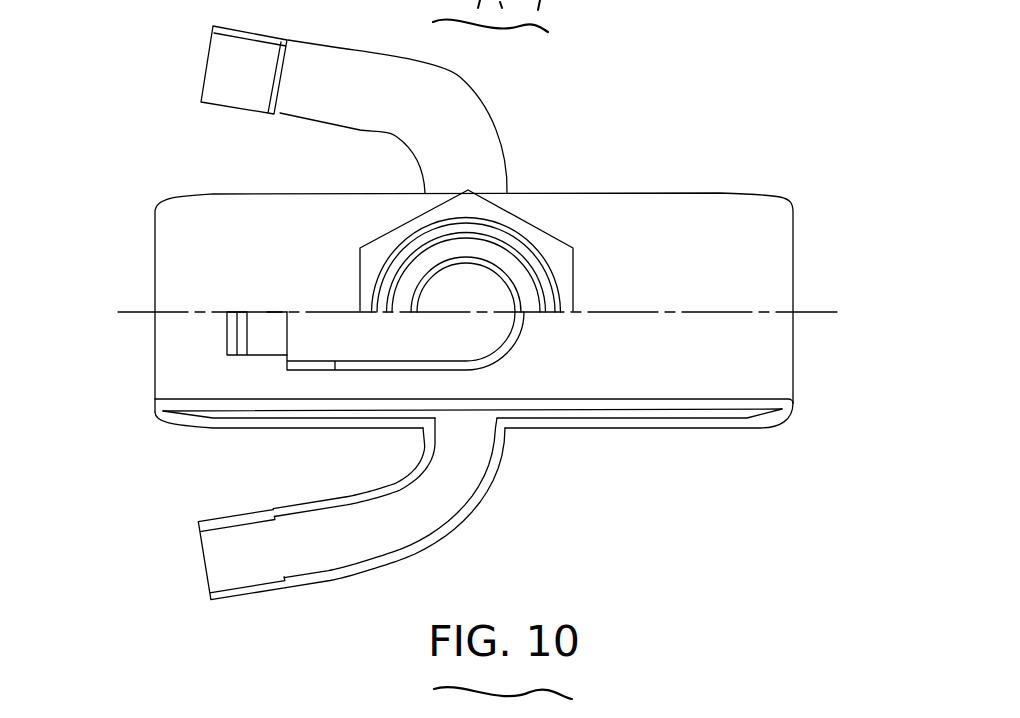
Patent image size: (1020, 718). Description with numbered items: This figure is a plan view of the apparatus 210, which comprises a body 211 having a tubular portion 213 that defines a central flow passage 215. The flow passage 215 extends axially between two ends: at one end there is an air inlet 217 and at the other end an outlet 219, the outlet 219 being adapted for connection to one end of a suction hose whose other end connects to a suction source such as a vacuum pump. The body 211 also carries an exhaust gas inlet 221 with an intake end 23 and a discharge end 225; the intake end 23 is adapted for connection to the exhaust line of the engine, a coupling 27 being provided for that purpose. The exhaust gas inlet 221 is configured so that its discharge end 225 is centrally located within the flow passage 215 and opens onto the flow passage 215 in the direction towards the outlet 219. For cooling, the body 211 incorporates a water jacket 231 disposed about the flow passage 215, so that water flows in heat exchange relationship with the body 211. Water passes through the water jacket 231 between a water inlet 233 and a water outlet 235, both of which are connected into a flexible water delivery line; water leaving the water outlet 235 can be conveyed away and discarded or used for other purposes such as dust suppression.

The apparatus 210 is at (752, 148).
The air inlet 217 is at (793, 273).
The outlet 219 is at (148, 274).
The boss 27 is at (532, 228).
The bore 23 is at (470, 270).
The discharge end 225 is at (271, 349).
The central flow passage 215 is at (172, 362).
The tubular portion 213 is at (692, 430).
The body 211 is at (738, 430).
The water jacket 231 is at (583, 413).
The exhaust gas inlet 221 is at (493, 355).
The water inlet 233 is at (298, 580).
The water outlet 235 is at (237, 105).